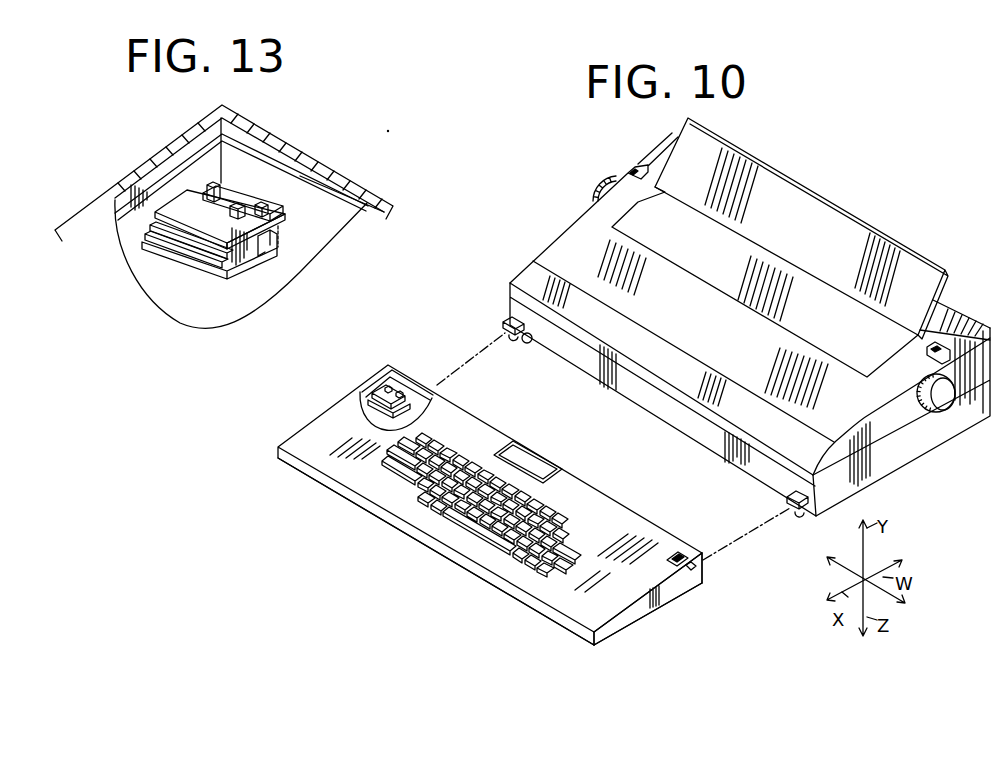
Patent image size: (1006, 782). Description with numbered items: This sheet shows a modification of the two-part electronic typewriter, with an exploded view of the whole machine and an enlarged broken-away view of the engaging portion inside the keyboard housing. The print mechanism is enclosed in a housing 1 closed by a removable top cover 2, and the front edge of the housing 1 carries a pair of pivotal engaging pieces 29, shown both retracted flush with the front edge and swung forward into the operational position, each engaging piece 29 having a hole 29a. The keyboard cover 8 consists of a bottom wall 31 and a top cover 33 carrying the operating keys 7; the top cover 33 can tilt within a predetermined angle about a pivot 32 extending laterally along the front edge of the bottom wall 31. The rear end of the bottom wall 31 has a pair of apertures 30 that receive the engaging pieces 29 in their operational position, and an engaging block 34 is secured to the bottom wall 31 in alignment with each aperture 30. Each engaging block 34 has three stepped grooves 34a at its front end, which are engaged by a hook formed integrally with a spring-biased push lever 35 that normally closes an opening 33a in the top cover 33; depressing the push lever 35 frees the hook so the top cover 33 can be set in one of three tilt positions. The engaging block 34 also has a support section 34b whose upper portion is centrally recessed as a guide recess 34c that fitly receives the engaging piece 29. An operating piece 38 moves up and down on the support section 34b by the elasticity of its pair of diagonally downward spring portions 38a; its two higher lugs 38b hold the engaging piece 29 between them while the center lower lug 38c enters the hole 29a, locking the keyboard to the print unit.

In FIG. 10, the housing 1 is at (912, 452).
In FIG. 10, the top cover 2 is at (876, 398).
In FIG. 10, the operating keys 7 is at (519, 552).
In FIG. 13, the keyboard cover 8 is at (103, 192).
In FIG. 10, the keyboard cover 8 is at (302, 435).
In FIG. 10, the engaging piece 29 is at (813, 524).
In FIG. 10, the hole 29a is at (507, 320).
In FIG. 13, the aperture 30 is at (250, 188).
In FIG. 10, the aperture 30 is at (703, 572).
In FIG. 13, the bottom wall 31 is at (344, 196).
In FIG. 10, the bottom wall 31 is at (637, 615).
In FIG. 10, the pivot 32 is at (598, 636).
In FIG. 13, the top cover 33 is at (322, 164).
In FIG. 10, the top cover 33 is at (672, 584).
In FIG. 10, the opening 33a is at (667, 558).
In FIG. 13, the engaging block 34 is at (240, 224).
In FIG. 10, the engaging block 34 is at (374, 385).
In FIG. 13, the stepped grooves 34a is at (177, 247).
In FIG. 13, the support section 34b is at (282, 228).
In FIG. 13, the guide recess 34c is at (210, 213).
In FIG. 10, the push lever 35 is at (683, 547).
In FIG. 13, the operating piece 38 is at (242, 209).
In FIG. 13, the spring portions 38a is at (278, 256).
In FIG. 13, the higher lugs 38b is at (211, 182).
In FIG. 13, the center lower lug 38c is at (224, 222).